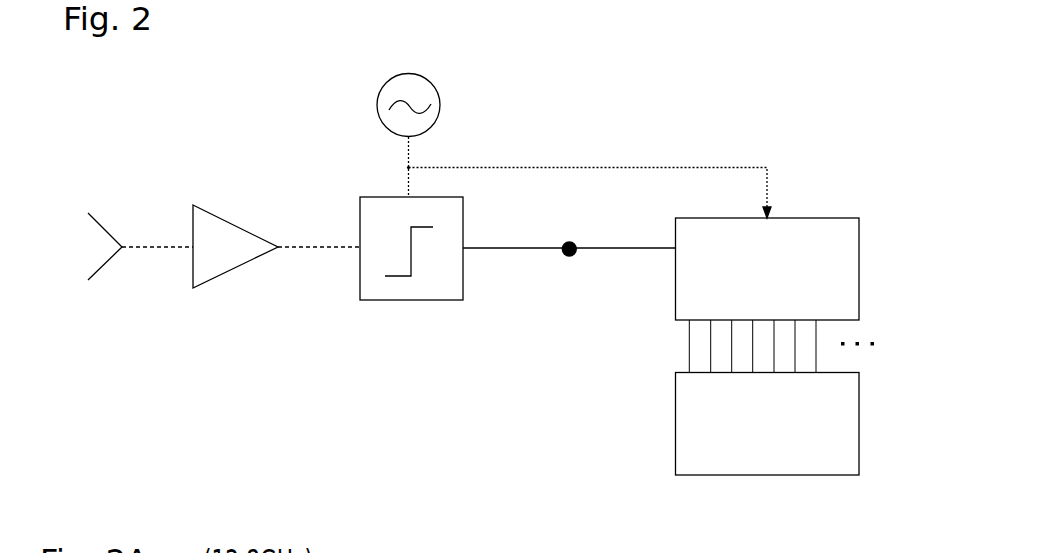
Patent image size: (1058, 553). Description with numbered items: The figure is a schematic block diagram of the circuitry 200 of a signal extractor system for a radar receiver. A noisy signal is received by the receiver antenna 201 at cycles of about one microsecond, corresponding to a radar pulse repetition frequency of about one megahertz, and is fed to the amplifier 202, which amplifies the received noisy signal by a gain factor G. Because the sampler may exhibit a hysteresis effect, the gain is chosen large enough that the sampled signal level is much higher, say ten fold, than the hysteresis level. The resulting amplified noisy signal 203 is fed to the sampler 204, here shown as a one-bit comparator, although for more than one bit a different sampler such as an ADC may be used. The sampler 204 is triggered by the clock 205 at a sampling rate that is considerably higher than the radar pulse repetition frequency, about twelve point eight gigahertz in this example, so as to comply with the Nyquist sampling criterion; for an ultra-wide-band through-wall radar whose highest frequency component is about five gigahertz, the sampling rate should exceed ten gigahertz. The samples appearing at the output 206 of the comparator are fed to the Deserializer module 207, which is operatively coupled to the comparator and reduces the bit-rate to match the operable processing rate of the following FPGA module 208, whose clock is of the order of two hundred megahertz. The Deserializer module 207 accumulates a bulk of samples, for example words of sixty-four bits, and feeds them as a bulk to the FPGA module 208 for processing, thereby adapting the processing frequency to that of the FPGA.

The circuitry 200 is at (675, 153).
The receiver antenna 201 is at (93, 249).
The amplifier 202 is at (193, 221).
The amplified noisy signal 203 is at (320, 249).
The sampler 204 is at (379, 300).
The clock 205 is at (397, 76).
The output of comparator 206 is at (569, 256).
The Deserializer module 207 is at (860, 277).
The FPGA module 208 is at (860, 435).